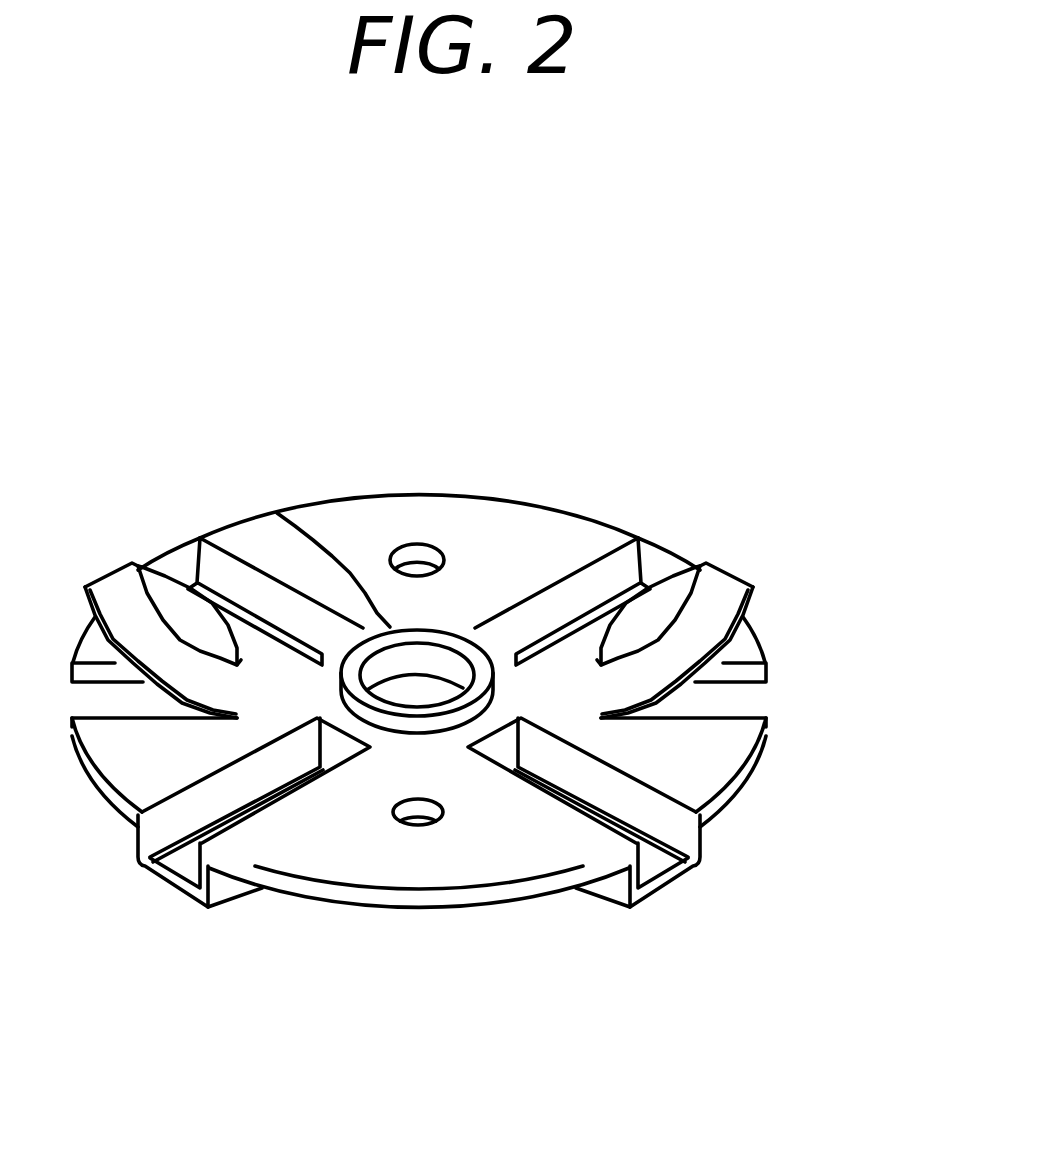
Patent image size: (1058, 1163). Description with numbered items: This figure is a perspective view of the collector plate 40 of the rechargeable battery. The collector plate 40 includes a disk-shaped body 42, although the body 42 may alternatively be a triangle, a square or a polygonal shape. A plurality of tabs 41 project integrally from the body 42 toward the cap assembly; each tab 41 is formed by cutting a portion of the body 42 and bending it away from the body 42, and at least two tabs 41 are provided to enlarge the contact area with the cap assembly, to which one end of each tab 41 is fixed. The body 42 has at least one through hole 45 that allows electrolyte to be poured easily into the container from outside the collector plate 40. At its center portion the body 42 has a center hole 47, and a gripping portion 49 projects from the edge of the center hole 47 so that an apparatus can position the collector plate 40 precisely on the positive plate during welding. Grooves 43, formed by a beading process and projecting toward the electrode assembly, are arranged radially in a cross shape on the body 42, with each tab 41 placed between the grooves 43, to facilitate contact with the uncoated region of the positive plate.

The collector plate 40 is at (800, 530).
The tab 41 is at (126, 596).
The body 42 is at (337, 867).
The groove 43 is at (166, 879).
The through hole 45 is at (413, 562).
The center hole 47 is at (433, 687).
The gripping portion 49 is at (277, 513).